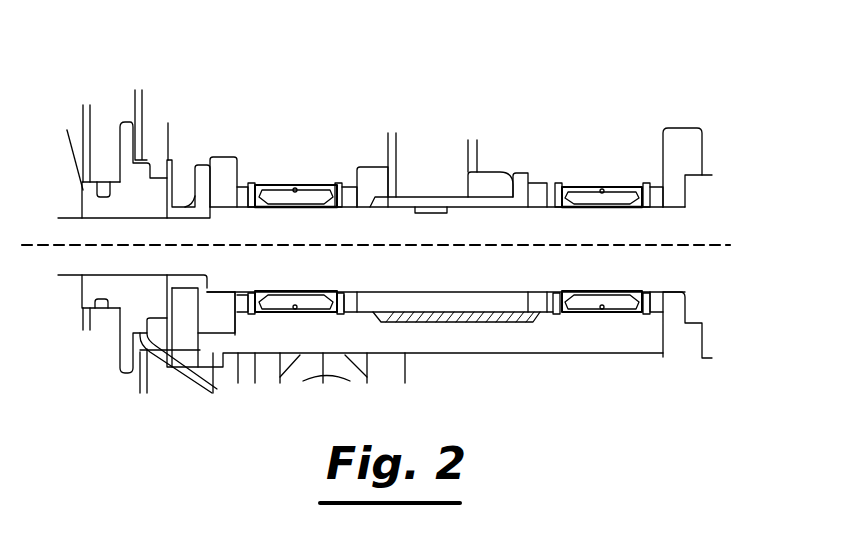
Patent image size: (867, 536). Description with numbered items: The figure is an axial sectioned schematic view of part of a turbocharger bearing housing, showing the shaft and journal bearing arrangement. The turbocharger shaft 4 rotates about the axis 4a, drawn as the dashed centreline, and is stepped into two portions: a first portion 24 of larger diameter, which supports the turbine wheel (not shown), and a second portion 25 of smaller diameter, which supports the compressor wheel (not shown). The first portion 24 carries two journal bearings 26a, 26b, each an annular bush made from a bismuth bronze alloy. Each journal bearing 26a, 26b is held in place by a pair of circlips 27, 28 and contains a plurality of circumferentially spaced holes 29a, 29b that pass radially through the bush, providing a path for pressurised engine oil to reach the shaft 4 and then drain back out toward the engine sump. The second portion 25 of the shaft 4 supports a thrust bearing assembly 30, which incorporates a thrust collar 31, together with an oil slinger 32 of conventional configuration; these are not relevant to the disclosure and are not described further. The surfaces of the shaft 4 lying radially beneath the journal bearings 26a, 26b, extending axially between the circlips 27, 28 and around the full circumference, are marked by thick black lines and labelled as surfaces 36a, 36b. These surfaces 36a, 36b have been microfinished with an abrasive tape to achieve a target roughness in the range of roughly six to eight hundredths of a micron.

The turbocharger shaft 4 is at (690, 227).
The axis 4a is at (397, 247).
The first portion 24 is at (635, 270).
The second portion 25 is at (137, 262).
The journal bearing 26a is at (278, 186).
The journal bearing 26b is at (620, 193).
The circlip 27 is at (253, 183).
The circlip 28 is at (340, 183).
The holes 29a is at (297, 186).
The holes 29b is at (602, 189).
The thrust bearing assembly 30 is at (180, 167).
The thrust collar 31 is at (204, 316).
The oil slinger 32 is at (117, 200).
The surface 36a is at (282, 207).
The surface 36b is at (602, 209).